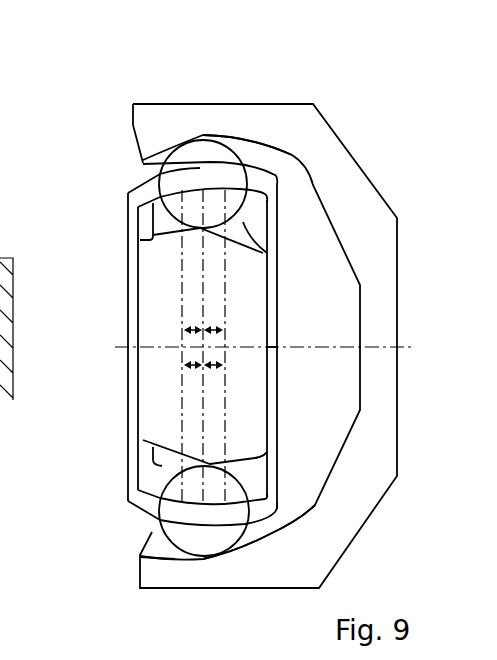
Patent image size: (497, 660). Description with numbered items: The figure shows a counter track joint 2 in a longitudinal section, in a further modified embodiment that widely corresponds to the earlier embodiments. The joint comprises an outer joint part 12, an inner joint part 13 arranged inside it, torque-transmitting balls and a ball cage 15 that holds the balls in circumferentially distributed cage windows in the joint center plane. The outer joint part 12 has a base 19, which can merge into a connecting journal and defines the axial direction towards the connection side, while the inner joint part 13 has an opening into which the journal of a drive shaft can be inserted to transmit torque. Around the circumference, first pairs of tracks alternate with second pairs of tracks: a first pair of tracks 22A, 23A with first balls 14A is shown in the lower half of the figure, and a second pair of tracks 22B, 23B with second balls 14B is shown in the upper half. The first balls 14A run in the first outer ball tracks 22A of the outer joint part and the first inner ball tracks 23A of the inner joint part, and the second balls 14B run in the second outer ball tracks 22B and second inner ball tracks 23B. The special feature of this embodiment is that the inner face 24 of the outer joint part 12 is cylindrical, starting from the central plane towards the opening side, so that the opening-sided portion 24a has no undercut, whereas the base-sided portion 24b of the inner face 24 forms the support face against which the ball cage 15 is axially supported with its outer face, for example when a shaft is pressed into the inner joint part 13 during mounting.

The bearing arrangement 2 is at (116, 105).
The outer joint part 12 is at (327, 143).
The inner joint part 13 is at (258, 297).
The first balls 14A is at (168, 558).
The second balls 14B is at (157, 152).
The ball cage 15 is at (133, 193).
The base 19 is at (388, 263).
The first outer ball tracks 22A is at (250, 537).
The second outer ball tracks 22B is at (243, 152).
The first inner ball tracks 23A is at (247, 468).
The second inner ball tracks 23B is at (243, 226).
The inner face 24 is at (200, 173).
The opening-sided portion 24a is at (152, 531).
The base-sided portion 24b is at (293, 505).